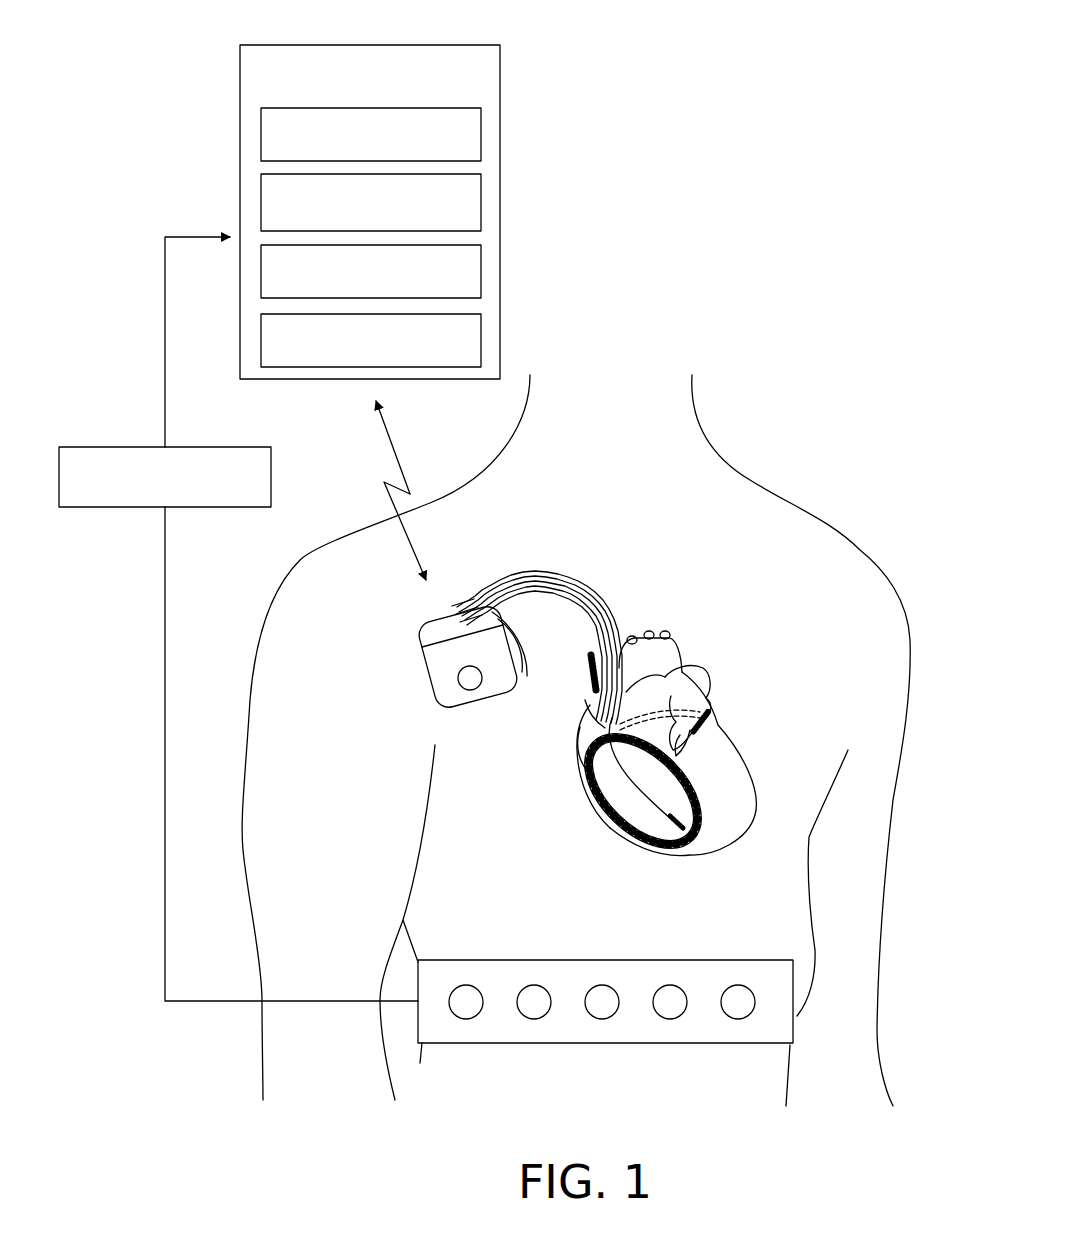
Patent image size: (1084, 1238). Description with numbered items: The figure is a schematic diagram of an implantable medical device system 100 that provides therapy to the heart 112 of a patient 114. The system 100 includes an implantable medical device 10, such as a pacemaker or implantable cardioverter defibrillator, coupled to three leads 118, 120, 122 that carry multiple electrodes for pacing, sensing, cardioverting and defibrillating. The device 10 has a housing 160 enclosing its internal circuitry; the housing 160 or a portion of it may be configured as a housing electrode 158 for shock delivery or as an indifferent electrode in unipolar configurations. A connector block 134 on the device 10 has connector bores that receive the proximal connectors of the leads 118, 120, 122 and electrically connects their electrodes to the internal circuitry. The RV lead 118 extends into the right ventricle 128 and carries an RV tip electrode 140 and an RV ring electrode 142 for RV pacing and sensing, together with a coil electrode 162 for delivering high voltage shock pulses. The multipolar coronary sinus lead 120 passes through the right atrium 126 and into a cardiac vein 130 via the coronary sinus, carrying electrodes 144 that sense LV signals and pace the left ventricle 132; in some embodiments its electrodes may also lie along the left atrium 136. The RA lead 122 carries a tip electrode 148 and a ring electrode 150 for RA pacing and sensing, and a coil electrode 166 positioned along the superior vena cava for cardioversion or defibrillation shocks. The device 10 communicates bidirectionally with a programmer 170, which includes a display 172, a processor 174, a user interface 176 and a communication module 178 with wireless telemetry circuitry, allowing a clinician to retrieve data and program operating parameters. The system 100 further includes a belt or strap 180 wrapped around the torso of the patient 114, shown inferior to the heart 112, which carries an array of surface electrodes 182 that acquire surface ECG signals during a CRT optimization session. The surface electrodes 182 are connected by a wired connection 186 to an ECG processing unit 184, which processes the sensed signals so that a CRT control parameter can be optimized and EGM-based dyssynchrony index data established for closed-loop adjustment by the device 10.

The implantable medical device 10 is at (444, 689).
The implantable medical device system 100 is at (738, 315).
The heart 112 is at (648, 775).
The patient 114 is at (808, 514).
The right ventricular lead 118 is at (568, 590).
The coronary sinus lead 120 is at (605, 622).
The right atrial lead 122 is at (563, 617).
The right atrium 126 is at (592, 747).
The right ventricle 128 is at (630, 807).
The cardiac vein 130 is at (622, 720).
The left ventricle 132 is at (742, 776).
The connector block 134 is at (416, 633).
The left atrium 136 is at (682, 690).
The RV tip electrode 140 is at (685, 830).
The RV ring electrode 142 is at (690, 797).
The LV electrodes 144 is at (710, 720).
The RA tip electrode 148 is at (588, 700).
The RA ring electrode 150 is at (580, 727).
The housing electrode 158 is at (480, 686).
The housing 160 is at (438, 694).
The RV coil electrode 162 is at (617, 777).
The SVC coil electrode 166 is at (593, 670).
The programmer 170 is at (353, 100).
The display 172 is at (353, 158).
The processor 174 is at (353, 225).
The user interface 176 is at (353, 295).
The communication module 178 is at (353, 363).
The strap 180 is at (452, 960).
The surface electrodes 182 is at (604, 1032).
The ECG processing unit 184 is at (272, 480).
The wired connection 186 is at (165, 633).